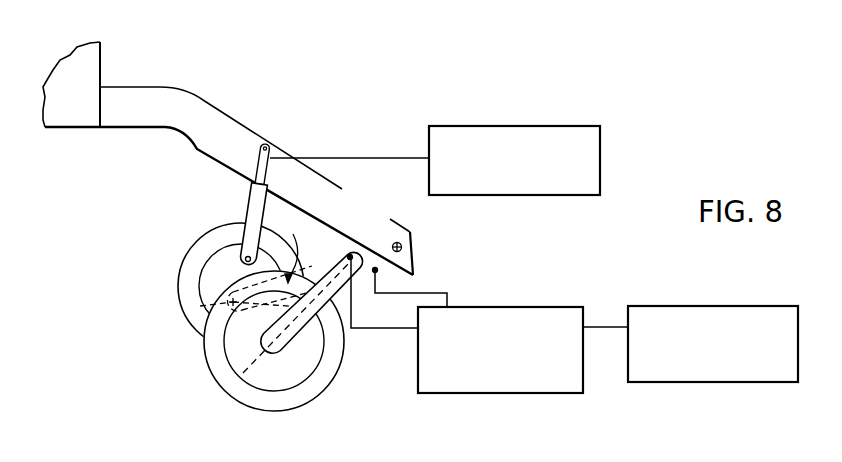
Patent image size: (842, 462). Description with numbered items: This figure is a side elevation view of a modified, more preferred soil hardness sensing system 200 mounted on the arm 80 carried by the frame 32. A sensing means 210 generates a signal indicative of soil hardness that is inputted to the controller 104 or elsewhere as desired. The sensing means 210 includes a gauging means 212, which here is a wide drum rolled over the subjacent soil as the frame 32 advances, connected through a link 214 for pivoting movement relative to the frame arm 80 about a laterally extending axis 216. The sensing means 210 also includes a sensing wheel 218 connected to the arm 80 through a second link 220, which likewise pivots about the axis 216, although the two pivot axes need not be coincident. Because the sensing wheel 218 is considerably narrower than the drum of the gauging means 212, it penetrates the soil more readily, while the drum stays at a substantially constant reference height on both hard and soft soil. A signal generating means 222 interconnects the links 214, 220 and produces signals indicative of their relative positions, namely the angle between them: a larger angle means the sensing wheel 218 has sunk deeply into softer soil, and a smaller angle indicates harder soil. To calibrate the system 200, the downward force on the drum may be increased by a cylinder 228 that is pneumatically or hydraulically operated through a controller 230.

The frame 32 is at (90, 60).
The arm 80 is at (165, 97).
The sensing system 200 is at (399, 90).
The sensing means 210 is at (223, 317).
The gauging means 212 is at (172, 313).
The link 214 is at (333, 228).
The axis 216 is at (411, 233).
The sensing wheel 218 is at (235, 392).
The link 220 is at (318, 330).
The signal generating means 222 is at (516, 389).
The cylinder 228 is at (250, 206).
The controller 230 is at (527, 184).
The controller 104 is at (726, 370).